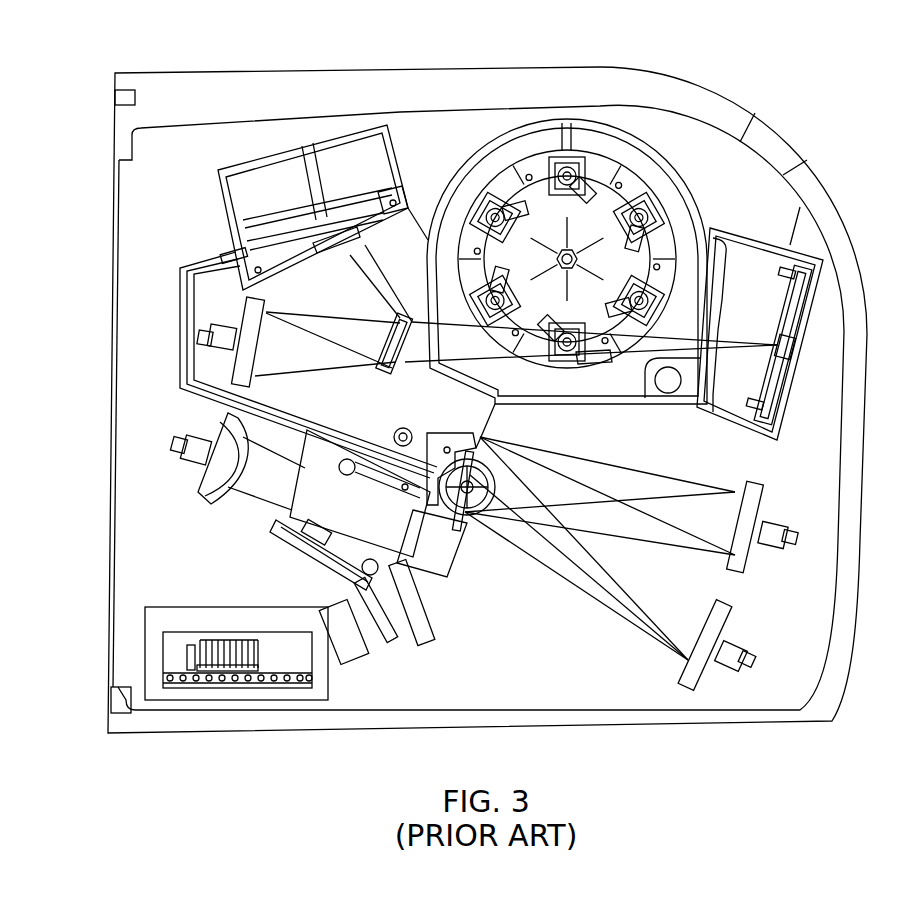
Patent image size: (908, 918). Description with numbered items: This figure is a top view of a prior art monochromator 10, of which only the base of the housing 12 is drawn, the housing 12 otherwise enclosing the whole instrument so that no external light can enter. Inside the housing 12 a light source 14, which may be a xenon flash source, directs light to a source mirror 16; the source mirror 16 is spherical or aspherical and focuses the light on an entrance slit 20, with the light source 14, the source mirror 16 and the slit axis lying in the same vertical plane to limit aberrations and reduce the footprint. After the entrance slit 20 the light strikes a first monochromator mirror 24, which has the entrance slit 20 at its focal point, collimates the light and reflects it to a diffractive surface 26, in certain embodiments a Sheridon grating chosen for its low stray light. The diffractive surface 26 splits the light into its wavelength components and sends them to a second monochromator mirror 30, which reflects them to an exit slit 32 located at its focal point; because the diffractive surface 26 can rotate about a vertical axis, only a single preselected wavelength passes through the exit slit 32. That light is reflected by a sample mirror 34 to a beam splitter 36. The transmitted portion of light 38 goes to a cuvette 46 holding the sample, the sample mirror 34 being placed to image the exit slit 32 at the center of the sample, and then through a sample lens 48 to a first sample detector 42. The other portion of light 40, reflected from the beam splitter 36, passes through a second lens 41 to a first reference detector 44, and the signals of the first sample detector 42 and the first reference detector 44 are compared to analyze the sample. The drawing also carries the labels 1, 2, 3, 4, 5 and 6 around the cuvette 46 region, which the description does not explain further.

The monochromator 10 is at (821, 66).
The housing 12 is at (348, 722).
The light source 14 is at (355, 518).
The source mirror 16 is at (202, 496).
The entrance slit 20 is at (430, 600).
The first monochromator mirror 24 is at (680, 670).
The diffractive surface 26 is at (467, 520).
The second monochromator mirror 30 is at (723, 562).
The exit slit 32 is at (506, 425).
The sample mirror 34 is at (243, 370).
The beam splitter 36 is at (405, 371).
The portion of light 38 is at (473, 357).
The other portion of light 40 is at (358, 256).
The second lens 41 is at (331, 261).
The first sample detector 42 is at (799, 344).
The first reference detector 44 is at (271, 191).
The cuvette 46 is at (580, 362).
The sample lens 48 is at (707, 327).
The sample station 1 is at (561, 329).
The sample station 2 is at (497, 293).
The sample station 3 is at (502, 216).
The sample station 4 is at (572, 188).
The sample station 5 is at (636, 224).
The sample station 6 is at (632, 303).